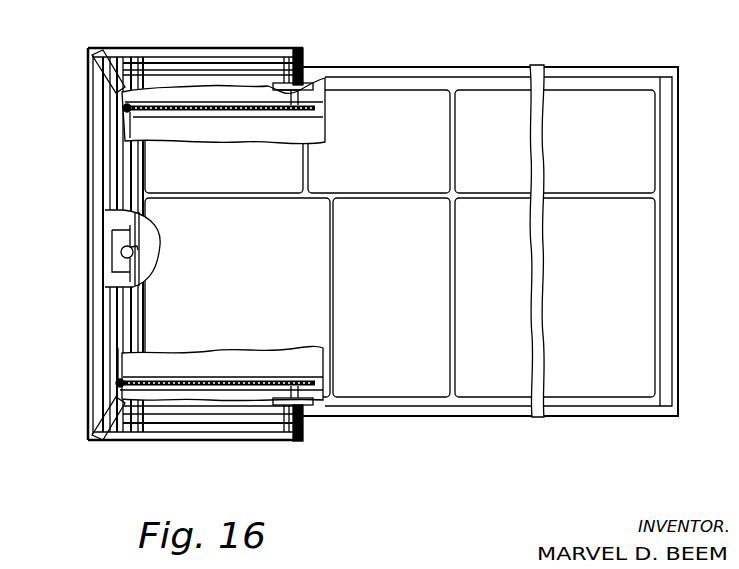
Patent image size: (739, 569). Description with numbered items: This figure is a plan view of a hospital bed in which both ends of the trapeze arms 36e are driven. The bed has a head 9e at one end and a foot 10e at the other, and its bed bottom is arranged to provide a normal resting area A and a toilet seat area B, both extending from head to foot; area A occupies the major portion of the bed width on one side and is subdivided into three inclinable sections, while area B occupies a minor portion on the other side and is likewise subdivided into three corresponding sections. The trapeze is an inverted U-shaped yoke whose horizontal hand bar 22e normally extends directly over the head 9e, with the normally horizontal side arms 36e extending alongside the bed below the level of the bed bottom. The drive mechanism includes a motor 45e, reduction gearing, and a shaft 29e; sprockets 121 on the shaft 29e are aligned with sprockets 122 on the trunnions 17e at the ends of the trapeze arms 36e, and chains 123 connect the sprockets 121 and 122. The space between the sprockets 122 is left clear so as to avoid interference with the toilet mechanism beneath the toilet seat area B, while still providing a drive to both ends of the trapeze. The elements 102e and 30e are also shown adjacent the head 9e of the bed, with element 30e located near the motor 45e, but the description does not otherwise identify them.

The foot 10e is at (436, 241).
The head 9e is at (92, 193).
The trapeze arms 36e is at (202, 48).
The trunnions 17e is at (303, 65).
The sprockets 121 is at (124, 108).
The aligned sprockets 122 is at (315, 106).
The chains 123 is at (222, 108).
The door inner stile 102e is at (147, 330).
The hand bar 22e is at (140, 260).
The motor 45e is at (142, 250).
The latch member 30e is at (140, 262).
The shaft 29e is at (142, 278).
The normal resting area A is at (694, 245).
The toilet seat area B is at (419, 141).